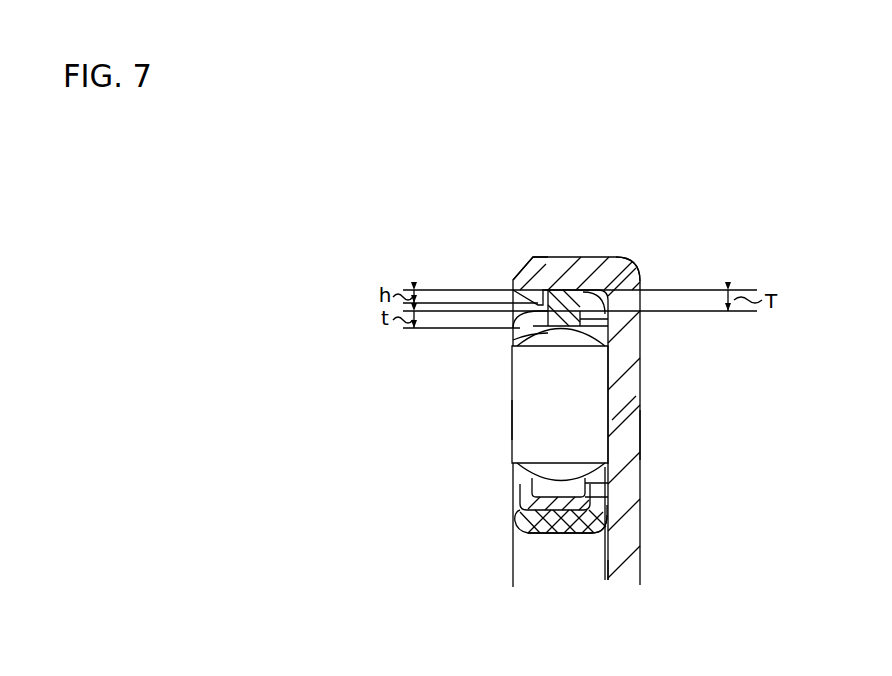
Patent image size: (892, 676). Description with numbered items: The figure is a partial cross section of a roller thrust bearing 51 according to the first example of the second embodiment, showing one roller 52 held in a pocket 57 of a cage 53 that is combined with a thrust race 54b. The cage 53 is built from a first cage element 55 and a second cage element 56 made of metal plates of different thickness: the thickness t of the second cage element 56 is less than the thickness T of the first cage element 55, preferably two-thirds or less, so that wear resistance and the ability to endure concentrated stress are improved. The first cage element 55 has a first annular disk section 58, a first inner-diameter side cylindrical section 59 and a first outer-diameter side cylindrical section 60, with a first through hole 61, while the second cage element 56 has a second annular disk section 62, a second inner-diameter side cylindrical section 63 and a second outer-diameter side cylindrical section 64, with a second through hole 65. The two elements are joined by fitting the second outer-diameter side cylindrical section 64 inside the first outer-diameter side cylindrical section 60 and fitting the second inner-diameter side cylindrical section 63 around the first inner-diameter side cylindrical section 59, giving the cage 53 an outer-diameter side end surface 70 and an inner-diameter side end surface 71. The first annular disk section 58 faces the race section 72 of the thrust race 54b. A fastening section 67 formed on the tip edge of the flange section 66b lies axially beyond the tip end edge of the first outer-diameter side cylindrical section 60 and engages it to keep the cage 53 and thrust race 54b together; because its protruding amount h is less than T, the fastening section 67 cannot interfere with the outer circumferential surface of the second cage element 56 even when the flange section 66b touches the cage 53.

The roller thrust bearing 51 is at (500, 443).
The roller 52 is at (523, 413).
The cage 53 is at (590, 540).
The thrust race 54b is at (645, 433).
The first cage element 55 is at (610, 323).
The second cage element 56 is at (512, 332).
The pocket 57 is at (608, 495).
The first annular disk section 58 is at (606, 514).
The first inner-diameter side cylindrical section 59 is at (553, 534).
The first outer-diameter side cylindrical section 60 is at (580, 285).
The first through hole 61 is at (625, 369).
The second annular disk section 62 is at (520, 493).
The second inner-diameter side cylindrical section 63 is at (513, 560).
The second outer-diameter side cylindrical section 64 is at (553, 316).
The second through hole 65 is at (522, 477).
The flange section 66b is at (608, 268).
The fastening section 67 is at (527, 272).
The outer-diameter side end surface 70 is at (517, 343).
The inner-diameter side end surface 71 is at (612, 478).
The race section 72 is at (628, 405).